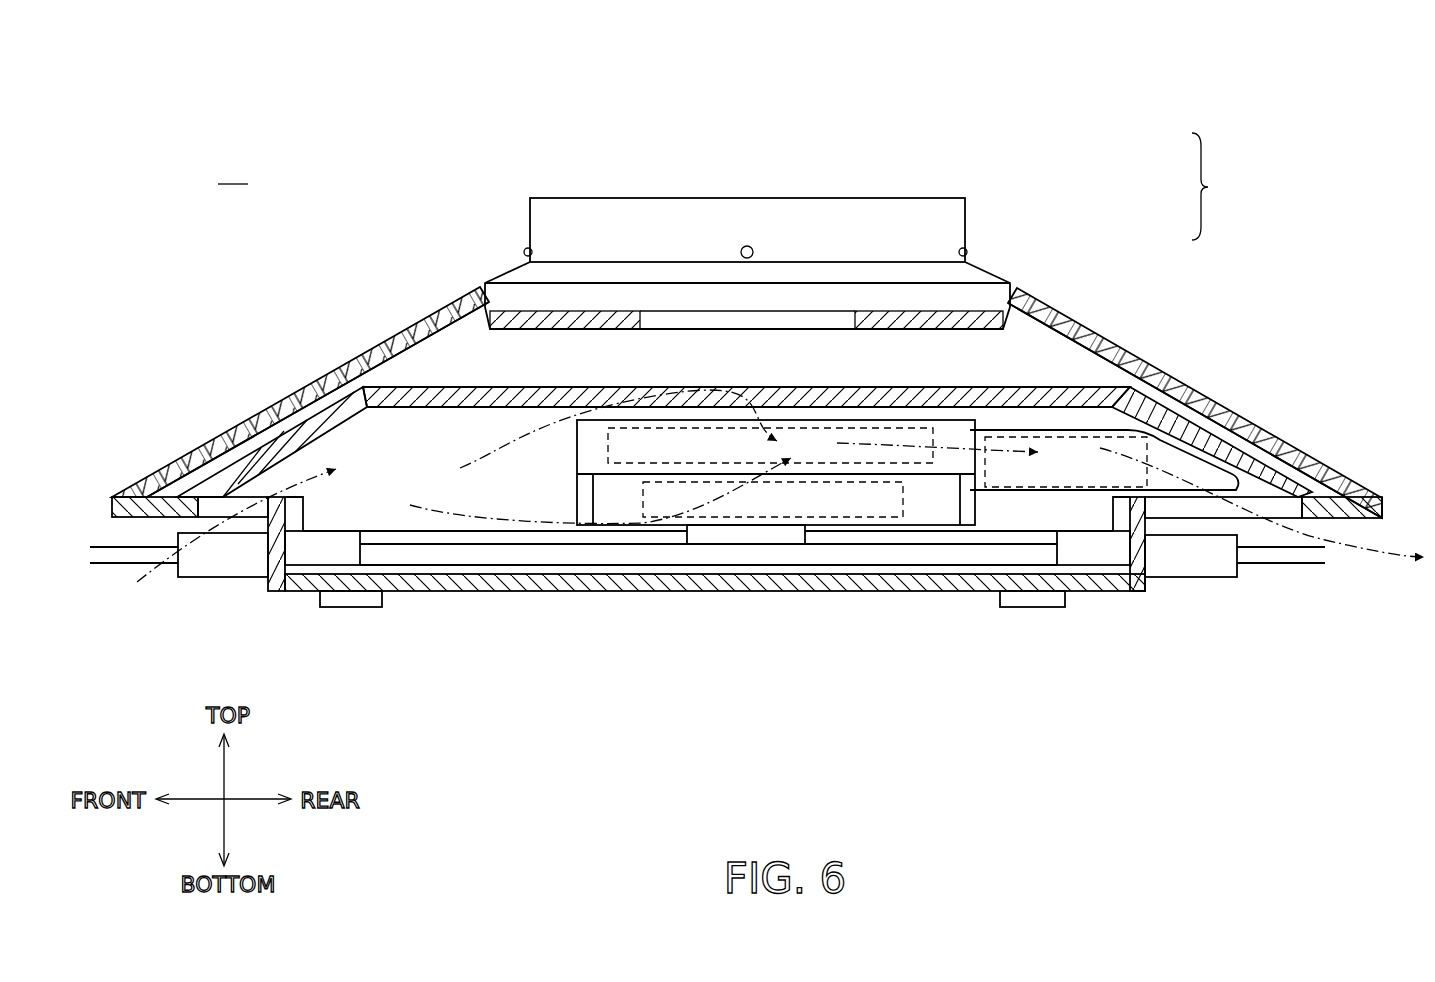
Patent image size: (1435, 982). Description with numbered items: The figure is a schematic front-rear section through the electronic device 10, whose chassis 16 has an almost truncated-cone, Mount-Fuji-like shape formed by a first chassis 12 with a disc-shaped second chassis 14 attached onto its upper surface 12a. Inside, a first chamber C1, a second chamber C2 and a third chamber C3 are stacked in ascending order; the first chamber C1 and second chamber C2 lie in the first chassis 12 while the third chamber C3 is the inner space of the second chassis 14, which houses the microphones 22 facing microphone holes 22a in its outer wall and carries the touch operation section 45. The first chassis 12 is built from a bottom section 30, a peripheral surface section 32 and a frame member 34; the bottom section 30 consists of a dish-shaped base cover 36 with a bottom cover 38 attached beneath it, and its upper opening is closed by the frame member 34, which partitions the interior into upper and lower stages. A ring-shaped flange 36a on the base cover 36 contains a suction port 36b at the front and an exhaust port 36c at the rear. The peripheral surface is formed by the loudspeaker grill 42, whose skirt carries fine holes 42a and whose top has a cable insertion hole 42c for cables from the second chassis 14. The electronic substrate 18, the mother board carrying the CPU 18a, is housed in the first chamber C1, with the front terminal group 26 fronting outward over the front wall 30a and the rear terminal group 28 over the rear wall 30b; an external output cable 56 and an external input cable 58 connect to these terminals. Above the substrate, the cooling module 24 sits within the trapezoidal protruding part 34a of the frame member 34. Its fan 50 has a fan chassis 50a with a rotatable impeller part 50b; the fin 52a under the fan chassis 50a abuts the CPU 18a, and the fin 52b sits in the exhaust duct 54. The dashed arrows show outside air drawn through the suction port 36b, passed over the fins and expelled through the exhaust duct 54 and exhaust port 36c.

The electronic device 10 is at (613, 242).
The first chassis 12 is at (1070, 312).
The upper surface 12a is at (884, 309).
The second chassis 14 is at (972, 203).
The chassis 16 is at (1217, 186).
The electronic substrate 18 is at (482, 560).
The CPU 18a is at (733, 537).
The microphones 22 is at (747, 245).
The microphone holes 22a is at (525, 249).
The cooling module 24 is at (1095, 421).
The front terminal group 26 is at (279, 562).
The rear terminal group 28 is at (1100, 552).
The bottom section 30 is at (905, 596).
The front wall 30a is at (262, 541).
The rear wall 30b is at (1140, 594).
The peripheral surface section 32 is at (292, 391).
The frame member 34 is at (228, 458).
The protruding part 34a is at (813, 395).
The base cover 36 is at (239, 578).
The flange 36a is at (96, 566).
The suction port 36b is at (163, 467).
The exhaust port 36c is at (1295, 520).
The bottom cover 38 is at (624, 578).
The loudspeaker grill 42 is at (1237, 416).
The holes 42a is at (328, 366).
The cable insertion hole 42c is at (707, 318).
The touch operation section 45 is at (597, 280).
The fan 50 is at (673, 448).
The fan chassis 50a is at (588, 455).
The impeller part 50b is at (845, 483).
The fin 52a is at (785, 518).
The fin 52b is at (1028, 489).
The exhaust duct 54 is at (1157, 560).
The external output cable 56 is at (123, 566).
The external input cable 58 is at (1250, 566).
The first chamber C1 is at (400, 508).
The second chamber C2 is at (440, 352).
The third chamber C3 is at (652, 220).